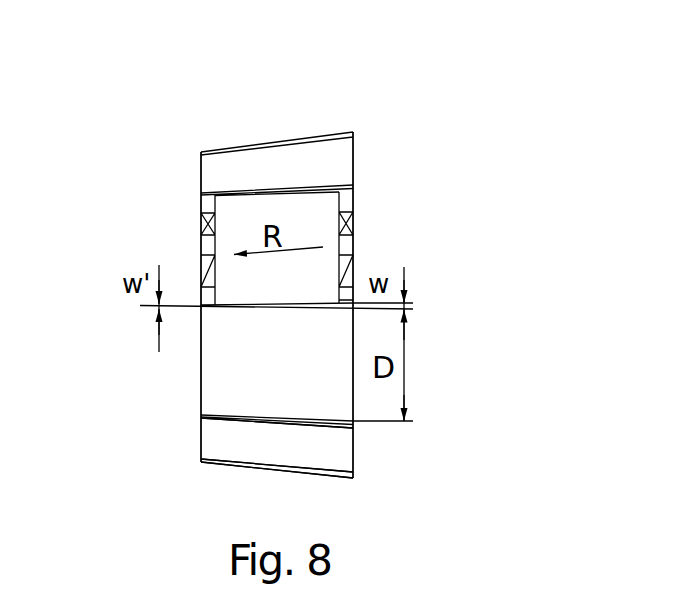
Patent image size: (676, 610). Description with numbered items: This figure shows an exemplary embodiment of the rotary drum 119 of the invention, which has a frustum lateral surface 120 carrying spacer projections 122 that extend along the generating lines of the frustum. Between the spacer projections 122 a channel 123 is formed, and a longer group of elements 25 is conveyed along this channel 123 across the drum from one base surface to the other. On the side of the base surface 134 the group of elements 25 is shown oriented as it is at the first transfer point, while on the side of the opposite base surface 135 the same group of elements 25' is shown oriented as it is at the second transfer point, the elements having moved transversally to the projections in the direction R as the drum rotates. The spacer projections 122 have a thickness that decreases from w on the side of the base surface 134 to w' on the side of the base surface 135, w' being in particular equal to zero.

The drum 119 is at (313, 128).
The lateral surface 120 is at (267, 153).
The spacer projections 122 is at (233, 421).
The channel 123 is at (317, 403).
The base surface 134 is at (368, 163).
The base surface 135 is at (187, 172).
The group of elements 25 is at (408, 247).
The group of elements 25' is at (146, 249).